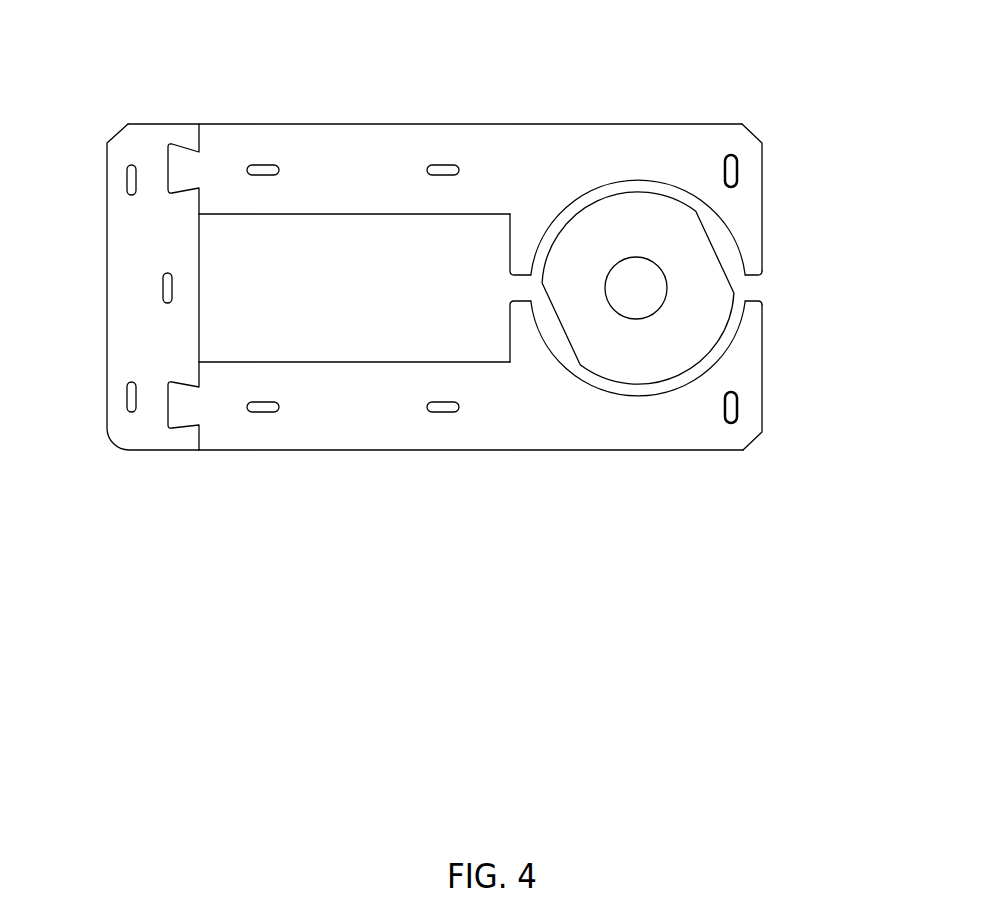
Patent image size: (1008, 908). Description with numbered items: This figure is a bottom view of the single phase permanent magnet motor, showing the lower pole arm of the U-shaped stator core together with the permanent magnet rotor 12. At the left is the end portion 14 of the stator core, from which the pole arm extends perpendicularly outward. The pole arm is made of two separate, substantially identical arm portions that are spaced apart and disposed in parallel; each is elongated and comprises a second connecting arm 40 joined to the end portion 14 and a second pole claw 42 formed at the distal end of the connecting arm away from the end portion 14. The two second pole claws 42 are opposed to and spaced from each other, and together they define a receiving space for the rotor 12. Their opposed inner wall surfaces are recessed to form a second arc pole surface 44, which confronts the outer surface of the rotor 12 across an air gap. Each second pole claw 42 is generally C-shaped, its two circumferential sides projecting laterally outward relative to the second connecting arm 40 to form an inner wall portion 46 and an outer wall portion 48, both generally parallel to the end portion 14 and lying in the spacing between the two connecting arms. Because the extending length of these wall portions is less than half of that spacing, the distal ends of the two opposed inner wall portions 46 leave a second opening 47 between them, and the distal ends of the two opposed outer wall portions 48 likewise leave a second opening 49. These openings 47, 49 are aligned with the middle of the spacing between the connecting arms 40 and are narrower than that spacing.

The permanent magnet rotor 12 is at (695, 253).
The end portion 14 is at (138, 263).
The second connecting arm 40 is at (385, 168).
The second pole claw 42 is at (695, 140).
The second arc pole surface 44 is at (602, 182).
The inner wall portion 46 is at (528, 342).
The second opening 47 is at (518, 287).
The outer wall portion 48 is at (750, 323).
The second opening 49 is at (762, 282).